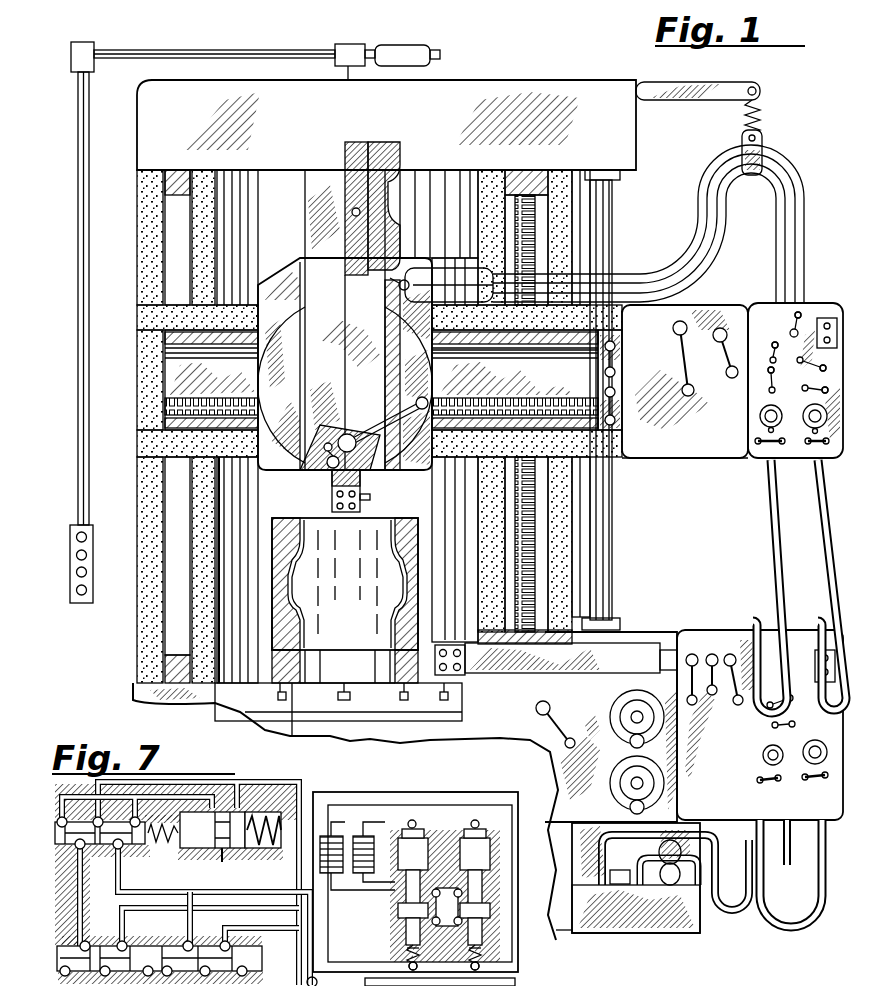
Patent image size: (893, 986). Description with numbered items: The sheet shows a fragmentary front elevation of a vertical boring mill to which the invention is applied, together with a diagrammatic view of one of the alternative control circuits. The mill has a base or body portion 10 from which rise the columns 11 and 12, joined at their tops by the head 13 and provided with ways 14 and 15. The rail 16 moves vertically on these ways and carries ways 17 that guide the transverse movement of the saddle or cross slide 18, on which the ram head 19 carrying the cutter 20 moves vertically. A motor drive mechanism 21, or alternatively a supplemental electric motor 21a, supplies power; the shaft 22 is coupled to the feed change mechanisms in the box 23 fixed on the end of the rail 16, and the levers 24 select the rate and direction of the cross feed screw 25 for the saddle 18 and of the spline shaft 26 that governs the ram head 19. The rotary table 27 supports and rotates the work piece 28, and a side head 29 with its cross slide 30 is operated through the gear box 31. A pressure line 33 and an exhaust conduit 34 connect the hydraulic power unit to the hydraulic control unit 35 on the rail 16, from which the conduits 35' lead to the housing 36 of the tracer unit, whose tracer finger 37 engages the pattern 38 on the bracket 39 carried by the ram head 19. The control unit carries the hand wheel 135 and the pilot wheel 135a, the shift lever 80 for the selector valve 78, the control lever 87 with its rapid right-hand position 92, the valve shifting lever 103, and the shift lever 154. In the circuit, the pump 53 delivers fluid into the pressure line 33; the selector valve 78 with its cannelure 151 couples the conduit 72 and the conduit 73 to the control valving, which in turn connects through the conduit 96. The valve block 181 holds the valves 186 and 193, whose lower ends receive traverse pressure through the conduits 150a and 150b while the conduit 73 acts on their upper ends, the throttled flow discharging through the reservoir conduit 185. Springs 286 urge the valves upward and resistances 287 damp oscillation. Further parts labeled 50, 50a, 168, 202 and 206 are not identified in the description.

In FIG. 1, the base or body portion 10 is at (133, 683).
In FIG. 1, the column 11 is at (222, 547).
In FIG. 1, the column 12 is at (478, 543).
In FIG. 1, the head 13 is at (636, 118).
In FIG. 1, the ways 14 is at (137, 212).
In FIG. 1, the ways 15 is at (480, 196).
In FIG. 1, the rail 16 is at (620, 458).
In FIG. 1, the ways 17 is at (650, 458).
In FIG. 1, the saddle or cross slide 18 is at (258, 288).
In FIG. 1, the ram head 19 is at (333, 186).
In FIG. 1, the cutter 20 is at (370, 498).
In FIG. 1, the motor drive mechanism 21 is at (572, 858).
In FIG. 1, the supplemental electric motor 21a is at (655, 885).
In FIG. 1, the shaft 22 is at (612, 530).
In FIG. 1, the box 23 is at (708, 460).
In FIG. 1, the levers 24 is at (690, 360).
In FIG. 1, the cross feed screw 25 is at (568, 392).
In FIG. 1, the spline shaft 26 is at (500, 365).
In FIG. 1, the rotary table 27 is at (272, 672).
In FIG. 1, the work piece 28 is at (272, 630).
In FIG. 1, the side head 29 is at (668, 640).
In FIG. 1, the cross slide 30 is at (630, 650).
In FIG. 1, the gear box 31 is at (712, 640).
In FIG. 1, the pressure line 33 is at (820, 520).
In FIG. 7, the pressure line 33 is at (288, 782).
In FIG. 1, the exhaust conduit 34 is at (780, 543).
In FIG. 7, the exhaust conduit 34 is at (290, 886).
In FIG. 1, the hydraulic control unit 35 is at (668, 301).
In FIG. 1, the conduits 35' is at (791, 172).
In FIG. 1, the housing of the tracer unit 36 is at (460, 272).
In FIG. 1, the tracer finger 37 is at (404, 280).
In FIG. 1, the pattern 38 is at (412, 133).
In FIG. 1, the bracket 39 is at (360, 142).
In FIG. 1, the switch bar 50 is at (760, 444).
In FIG. 1, the switch bar 50a is at (808, 445).
In FIG. 1, the pump 53 is at (722, 845).
In FIG. 7, the conduit 72 is at (80, 900).
In FIG. 7, the conduit 73 is at (160, 890).
In FIG. 7, the selector valve 78 is at (262, 957).
In FIG. 1, the shift lever 80 is at (795, 315).
In FIG. 1, the control lever 87 is at (774, 345).
In FIG. 1, the position 92 is at (660, 936).
In FIG. 1, the conduit 96 is at (560, 934).
In FIG. 1, the valve shifting lever 103 is at (771, 373).
In FIG. 1, the hand wheel 135 is at (768, 405).
In FIG. 1, the pilot wheel 135a is at (802, 410).
In FIG. 7, the conduit 150a is at (482, 966).
In FIG. 7, the conduit 150b is at (408, 966).
In FIG. 7, the groove or cannelure 151 is at (138, 848).
In FIG. 1, the shift lever 154 is at (821, 366).
In FIG. 1, the link 168 is at (812, 388).
In FIG. 7, the valve block 181 is at (450, 930).
In FIG. 7, the discharge or reservoir conduit 185 is at (331, 979).
In FIG. 7, the control valve 186 is at (440, 830).
In FIG. 7, the valve 193 is at (496, 822).
In FIG. 7, the valve 202 is at (236, 850).
In FIG. 7, the stem 206 is at (222, 862).
In FIG. 7, the springs 286 is at (405, 948).
In FIG. 7, the resistances 287 is at (370, 805).